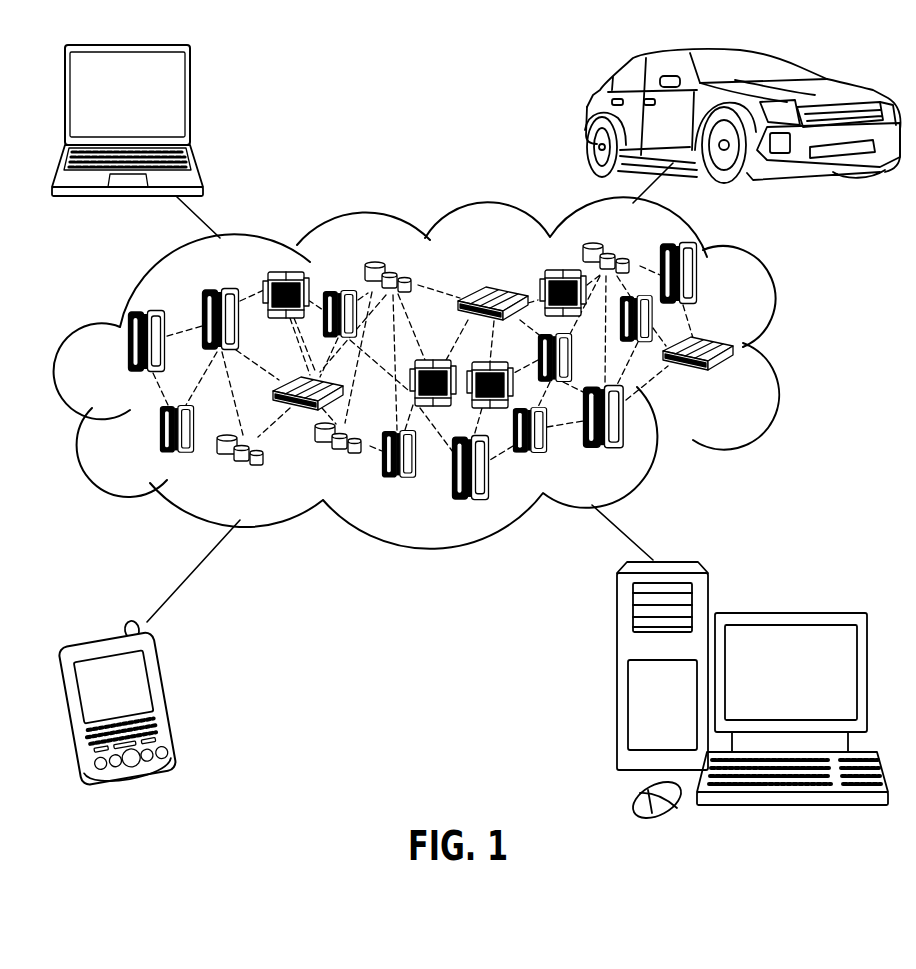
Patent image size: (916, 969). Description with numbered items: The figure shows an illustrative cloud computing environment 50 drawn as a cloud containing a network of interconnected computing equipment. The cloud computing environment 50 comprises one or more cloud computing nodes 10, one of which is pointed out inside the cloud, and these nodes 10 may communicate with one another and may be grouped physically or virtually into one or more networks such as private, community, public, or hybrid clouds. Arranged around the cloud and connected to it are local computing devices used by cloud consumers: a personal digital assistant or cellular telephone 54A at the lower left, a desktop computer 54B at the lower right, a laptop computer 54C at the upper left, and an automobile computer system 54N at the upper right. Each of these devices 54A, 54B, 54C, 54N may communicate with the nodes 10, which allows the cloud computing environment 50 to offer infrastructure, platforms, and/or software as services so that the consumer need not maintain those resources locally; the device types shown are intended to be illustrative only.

The cloud computing node 10 is at (738, 381).
The cloud computing environment 50 is at (790, 357).
The personal digital assistant or cellular telephone 54A is at (181, 703).
The desktop computer 54B is at (788, 612).
The laptop computer 54C is at (192, 102).
The automobile computer system 54N is at (591, 117).